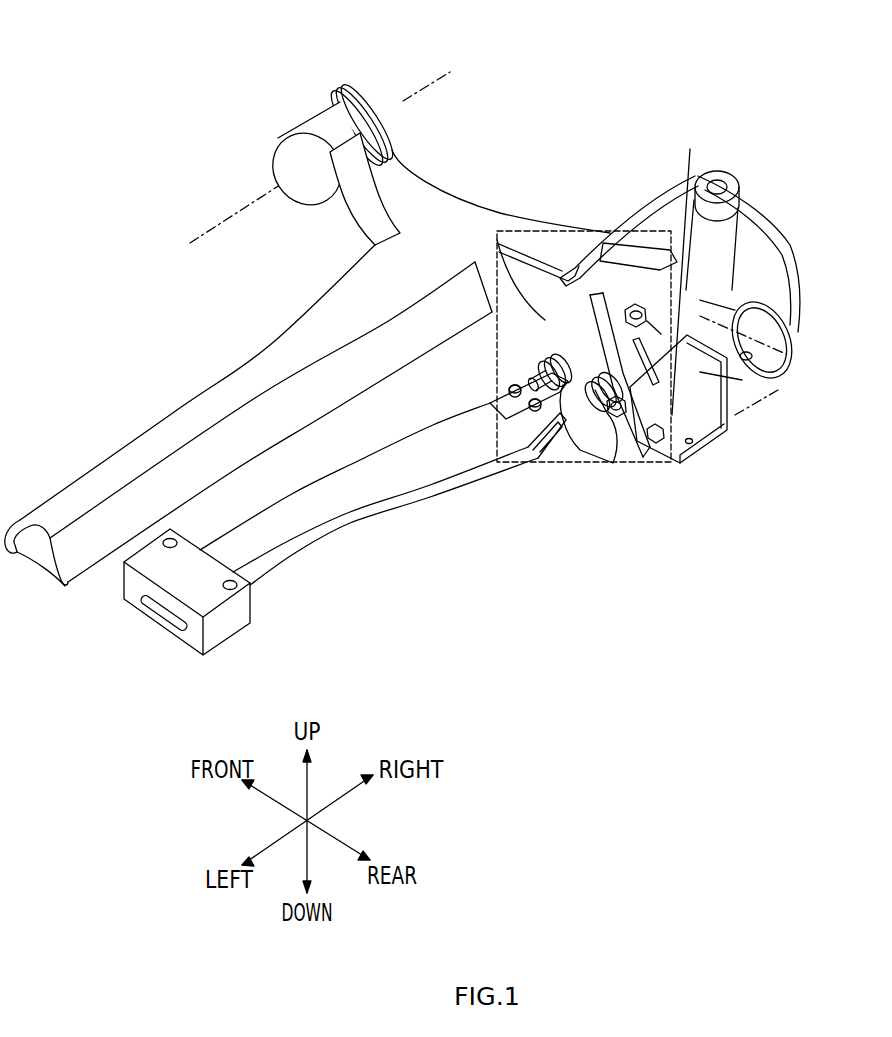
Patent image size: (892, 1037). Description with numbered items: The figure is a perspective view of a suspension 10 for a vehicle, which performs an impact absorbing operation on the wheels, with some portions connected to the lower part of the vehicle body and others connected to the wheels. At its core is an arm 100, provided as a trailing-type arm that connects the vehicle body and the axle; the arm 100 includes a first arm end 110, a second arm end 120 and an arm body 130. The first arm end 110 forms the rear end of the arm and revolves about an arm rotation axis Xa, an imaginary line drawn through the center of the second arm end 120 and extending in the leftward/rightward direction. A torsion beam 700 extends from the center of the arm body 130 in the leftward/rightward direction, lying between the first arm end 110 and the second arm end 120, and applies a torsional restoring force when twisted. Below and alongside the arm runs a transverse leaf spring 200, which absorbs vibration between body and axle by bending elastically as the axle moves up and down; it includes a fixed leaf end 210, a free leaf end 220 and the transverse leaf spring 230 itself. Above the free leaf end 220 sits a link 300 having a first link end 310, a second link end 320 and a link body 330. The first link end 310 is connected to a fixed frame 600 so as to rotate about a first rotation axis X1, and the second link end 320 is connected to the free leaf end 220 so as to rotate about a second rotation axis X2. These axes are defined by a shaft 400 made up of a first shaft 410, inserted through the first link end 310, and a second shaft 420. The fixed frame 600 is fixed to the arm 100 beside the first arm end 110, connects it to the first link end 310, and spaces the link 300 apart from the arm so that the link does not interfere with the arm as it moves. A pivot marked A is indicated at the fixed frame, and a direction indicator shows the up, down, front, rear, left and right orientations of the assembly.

The suspension 10 is at (99, 43).
The arm 100 is at (703, 738).
The first arm end 110 is at (781, 318).
The second arm end 120 is at (310, 131).
The arm body 130 is at (497, 230).
The transverse leaf spring 200 is at (703, 823).
The fixed leaf end 210 is at (227, 627).
The free leaf end 220 is at (577, 430).
The transverse leaf spring 230 is at (343, 503).
The link 300 is at (703, 915).
The first link end 310 is at (597, 300).
The second link end 320 is at (495, 404).
The link body 330 is at (565, 353).
The shaft 400 is at (653, 562).
The first shaft 410 is at (637, 440).
The second shaft 420 is at (594, 411).
The fixed frame 600 is at (700, 449).
The torsion beam 700 is at (172, 410).
The pivot axis A is at (685, 269).
The arm rotation axis Xa is at (413, 97).
The first rotation axis X1 is at (750, 398).
The second rotation axis X2 is at (693, 465).